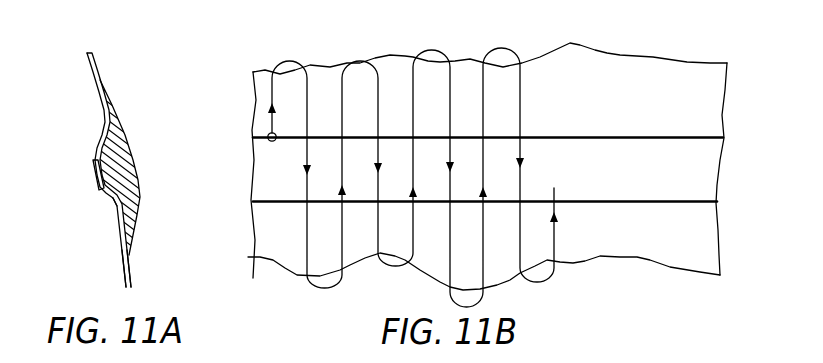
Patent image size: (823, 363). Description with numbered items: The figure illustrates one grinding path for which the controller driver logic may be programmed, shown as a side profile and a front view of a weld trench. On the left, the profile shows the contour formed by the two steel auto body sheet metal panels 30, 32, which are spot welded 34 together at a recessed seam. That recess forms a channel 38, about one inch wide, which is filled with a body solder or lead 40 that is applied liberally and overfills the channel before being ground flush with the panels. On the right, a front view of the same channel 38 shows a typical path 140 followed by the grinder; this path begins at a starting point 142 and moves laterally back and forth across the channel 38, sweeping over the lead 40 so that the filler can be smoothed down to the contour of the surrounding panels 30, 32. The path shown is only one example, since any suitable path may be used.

In FIG. 11A, the steel auto body panel 30 is at (100, 91).
In FIG. 11A, the steel auto body panel 32 is at (125, 257).
In FIG. 11A, the spot weld 34 is at (98, 176).
In FIG. 11A, the channel 38 is at (121, 151).
In FIG. 11B, the channel 38 is at (705, 155).
In FIG. 11A, the lead 40 is at (134, 206).
In FIG. 11B, the lead 40 is at (705, 117).
In FIG. 11B, the path 140 is at (287, 70).
In FIG. 11B, the starting point 142 is at (270, 133).